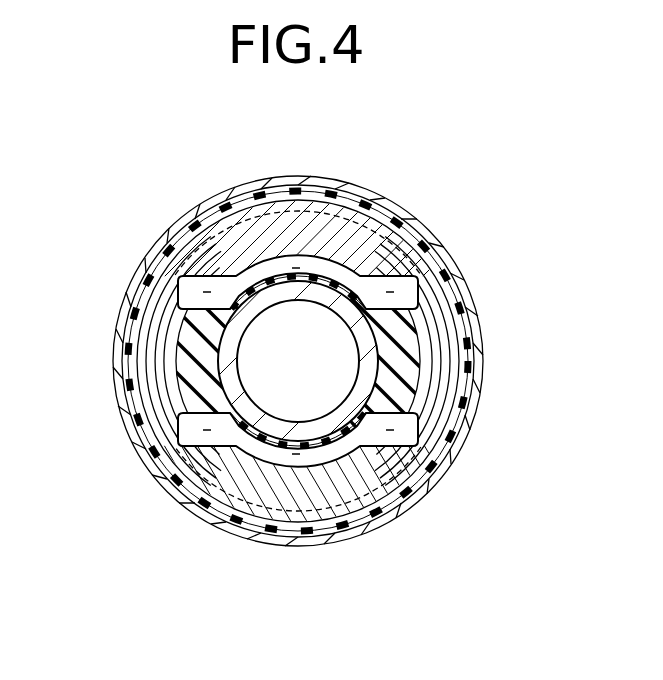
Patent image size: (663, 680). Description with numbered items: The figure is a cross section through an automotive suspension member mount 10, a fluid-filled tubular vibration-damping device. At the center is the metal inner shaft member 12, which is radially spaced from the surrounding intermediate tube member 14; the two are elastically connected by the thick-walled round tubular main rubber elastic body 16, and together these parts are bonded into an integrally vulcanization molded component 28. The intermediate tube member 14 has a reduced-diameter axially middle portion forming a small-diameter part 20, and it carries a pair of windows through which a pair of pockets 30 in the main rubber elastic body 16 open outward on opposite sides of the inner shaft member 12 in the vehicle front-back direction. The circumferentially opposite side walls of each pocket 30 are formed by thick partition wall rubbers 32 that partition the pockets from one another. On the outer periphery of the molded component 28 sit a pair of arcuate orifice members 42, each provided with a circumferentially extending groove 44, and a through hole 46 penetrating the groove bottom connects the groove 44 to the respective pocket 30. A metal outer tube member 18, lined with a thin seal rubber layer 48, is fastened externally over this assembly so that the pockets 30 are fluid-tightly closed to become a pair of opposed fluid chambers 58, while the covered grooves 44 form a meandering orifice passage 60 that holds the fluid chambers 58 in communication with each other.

The suspension member mount 10 is at (500, 172).
The inner shaft member 12 is at (360, 320).
The intermediate tube member 14 is at (150, 353).
The main rubber elastic body 16 is at (432, 343).
The outer tube member 18 is at (150, 262).
The small-diameter part 20 is at (298, 361).
The integrally vulcanization molded component 28 is at (298, 361).
The pocket 30 is at (412, 294).
The partition wall rubber 32 is at (193, 363).
The orifice member 42 is at (131, 310).
The groove 44 is at (284, 200).
The through hole 46 is at (200, 257).
The seal rubber layer 48 is at (383, 212).
The fluid chamber 58 is at (267, 266).
The orifice passage 60 is at (233, 522).